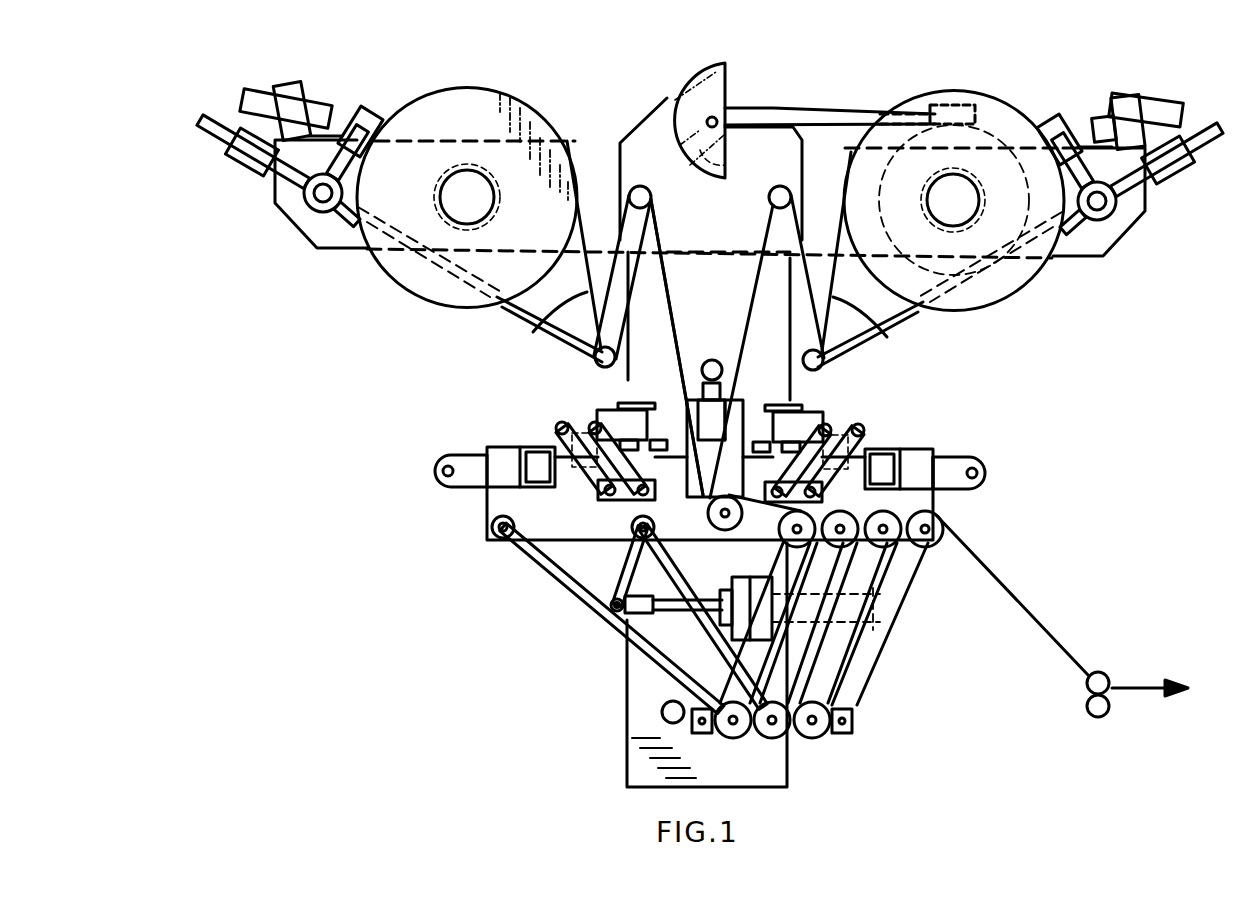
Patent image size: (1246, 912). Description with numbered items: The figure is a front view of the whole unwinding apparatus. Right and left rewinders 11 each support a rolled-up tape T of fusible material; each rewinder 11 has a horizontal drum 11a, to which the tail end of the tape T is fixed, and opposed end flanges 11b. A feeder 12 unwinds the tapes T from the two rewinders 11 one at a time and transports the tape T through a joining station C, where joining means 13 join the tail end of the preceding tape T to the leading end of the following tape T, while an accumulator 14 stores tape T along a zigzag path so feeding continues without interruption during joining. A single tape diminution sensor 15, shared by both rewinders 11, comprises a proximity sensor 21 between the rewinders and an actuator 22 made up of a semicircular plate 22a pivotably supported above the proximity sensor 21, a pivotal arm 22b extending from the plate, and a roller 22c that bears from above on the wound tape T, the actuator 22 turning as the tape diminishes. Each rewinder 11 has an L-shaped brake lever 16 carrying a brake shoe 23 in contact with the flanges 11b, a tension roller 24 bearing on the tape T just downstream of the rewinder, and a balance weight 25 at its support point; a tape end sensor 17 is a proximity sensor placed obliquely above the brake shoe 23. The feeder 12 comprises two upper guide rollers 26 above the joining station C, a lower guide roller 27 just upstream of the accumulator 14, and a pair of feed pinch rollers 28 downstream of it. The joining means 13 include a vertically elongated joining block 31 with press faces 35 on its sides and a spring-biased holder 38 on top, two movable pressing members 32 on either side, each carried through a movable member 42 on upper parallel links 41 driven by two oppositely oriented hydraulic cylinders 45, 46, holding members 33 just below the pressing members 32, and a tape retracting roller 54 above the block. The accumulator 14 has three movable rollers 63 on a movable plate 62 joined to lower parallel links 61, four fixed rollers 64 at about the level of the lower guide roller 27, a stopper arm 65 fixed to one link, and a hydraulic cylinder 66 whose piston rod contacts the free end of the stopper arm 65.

The rewinder 11 is at (532, 102).
The horizontal drum 11a is at (440, 184).
The end flanges 11b is at (410, 275).
The feeder 12 is at (1105, 665).
The joining means 13 is at (466, 398).
The accumulator 14 is at (872, 662).
The tape diminution sensor 15 is at (740, 84).
The brake lever 16 is at (350, 228).
The tape end sensor 17 is at (240, 86).
The proximity sensor 21 is at (720, 135).
The actuator 22 is at (868, 108).
The semicircular plate 22a is at (690, 85).
The pivotal arm 22b is at (852, 108).
The roller 22c is at (962, 100).
The brake shoe 23 is at (380, 118).
The tension roller 24 is at (617, 352).
The balance weight 25 is at (245, 170).
The upper guide rollers 26 is at (652, 197).
The lower guide roller 27 is at (722, 528).
The feed pinch rollers 28 is at (1097, 718).
The joining block 31 is at (700, 420).
The movable pressing member 32 is at (630, 432).
The holding member 33 is at (655, 452).
The press faces 35 is at (743, 423).
The holder 38 is at (727, 355).
The upper parallel links 41 is at (562, 442).
The movable member 42 is at (580, 424).
The hydraulic cylinder 45 is at (535, 462).
The hydraulic cylinder 46 is at (498, 458).
The tape retracting roller 54 is at (705, 362).
The lower parallel links 61 is at (605, 630).
The movable plate 62 is at (855, 732).
The movable rollers 63 is at (812, 738).
The fixed rollers 64 is at (924, 545).
The stopper arm 65 is at (622, 562).
The hydraulic cylinder 66 is at (878, 597).
The joining station C is at (455, 515).
The tape T is at (535, 334).